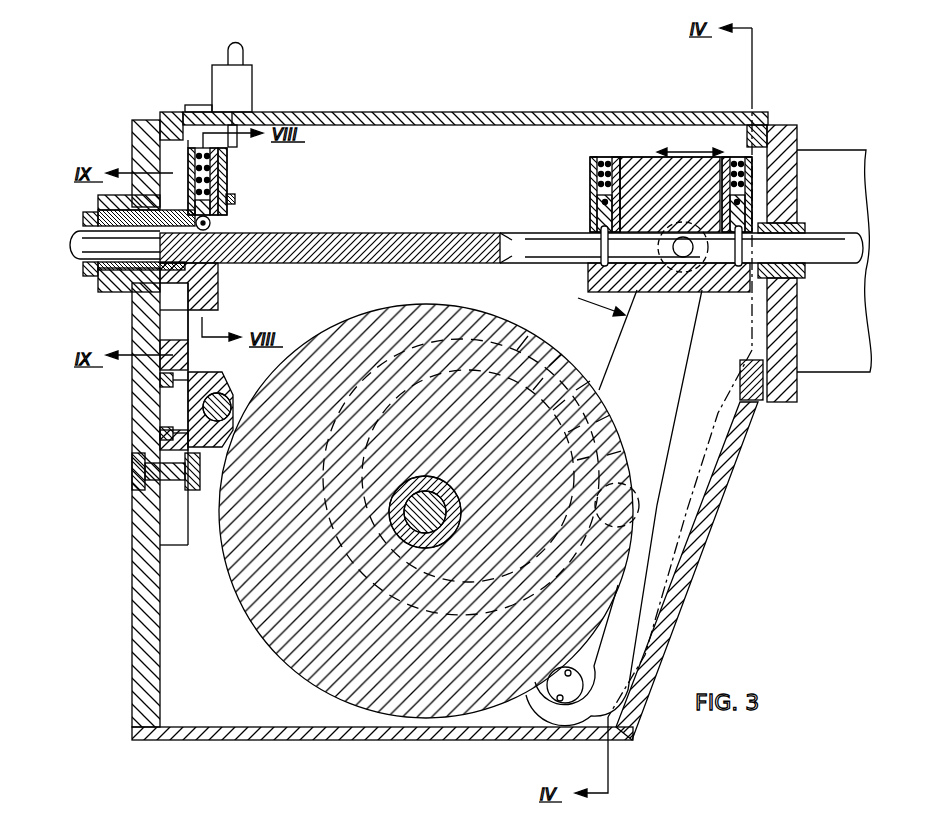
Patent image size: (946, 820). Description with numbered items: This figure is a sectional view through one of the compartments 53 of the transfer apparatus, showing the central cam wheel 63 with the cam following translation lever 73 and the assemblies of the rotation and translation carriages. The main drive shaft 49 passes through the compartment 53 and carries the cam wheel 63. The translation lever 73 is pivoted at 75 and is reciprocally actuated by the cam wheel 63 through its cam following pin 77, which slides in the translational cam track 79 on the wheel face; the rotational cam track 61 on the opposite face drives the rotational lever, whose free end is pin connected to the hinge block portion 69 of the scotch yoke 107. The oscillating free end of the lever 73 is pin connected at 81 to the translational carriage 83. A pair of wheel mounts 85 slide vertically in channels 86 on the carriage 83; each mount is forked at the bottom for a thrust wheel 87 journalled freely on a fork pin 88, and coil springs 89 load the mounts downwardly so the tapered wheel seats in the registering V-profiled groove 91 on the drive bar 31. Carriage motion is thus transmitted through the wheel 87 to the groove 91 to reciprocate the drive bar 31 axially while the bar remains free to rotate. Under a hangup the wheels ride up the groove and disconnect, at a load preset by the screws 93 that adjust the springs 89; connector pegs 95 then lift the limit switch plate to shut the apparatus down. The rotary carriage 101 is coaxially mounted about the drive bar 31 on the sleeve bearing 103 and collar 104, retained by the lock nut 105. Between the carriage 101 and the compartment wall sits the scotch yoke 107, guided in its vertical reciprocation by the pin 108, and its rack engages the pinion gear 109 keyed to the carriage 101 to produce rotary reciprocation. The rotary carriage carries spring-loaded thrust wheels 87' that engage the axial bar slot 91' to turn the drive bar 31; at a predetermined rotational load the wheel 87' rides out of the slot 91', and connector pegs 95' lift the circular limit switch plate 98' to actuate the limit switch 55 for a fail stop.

The compartment 53 is at (160, 120).
The limit switch 55 is at (244, 78).
The pinion gear 109 is at (172, 197).
The circular limit switch plate 98' is at (231, 181).
The connector pegs 95' is at (250, 194).
The thrust wheel 87' is at (235, 226).
The axial bar slot 91' is at (291, 236).
The collar 104 is at (100, 200).
The lock nut 105 is at (88, 214).
The sleeve bearing 103 is at (98, 280).
The rotary carriage 101 is at (218, 280).
The scotch yoke 107 is at (182, 320).
The hinge block portion 69 is at (222, 372).
The rotational cam track 61 is at (226, 396).
The pin 108 is at (176, 494).
The cam wheel 63 is at (250, 636).
The main drive shaft 49 is at (448, 490).
The translational cam track 79 is at (545, 345).
The cam following pin 77 is at (625, 482).
The translation lever 73 is at (683, 332).
The pivot 75 is at (548, 702).
The drive bar 31 is at (505, 248).
The pin connection 81 is at (660, 247).
The V-profiled groove 91 is at (666, 246).
The translational carriage 83 is at (596, 160).
The coil springs 89 is at (598, 170).
The connector pegs 95 is at (635, 194).
The thrust wheel 87 is at (642, 209).
The fork pin 88 is at (600, 215).
The wheel mounts 85 is at (604, 158).
The screws 93 is at (675, 150).
The channels 86 is at (622, 182).